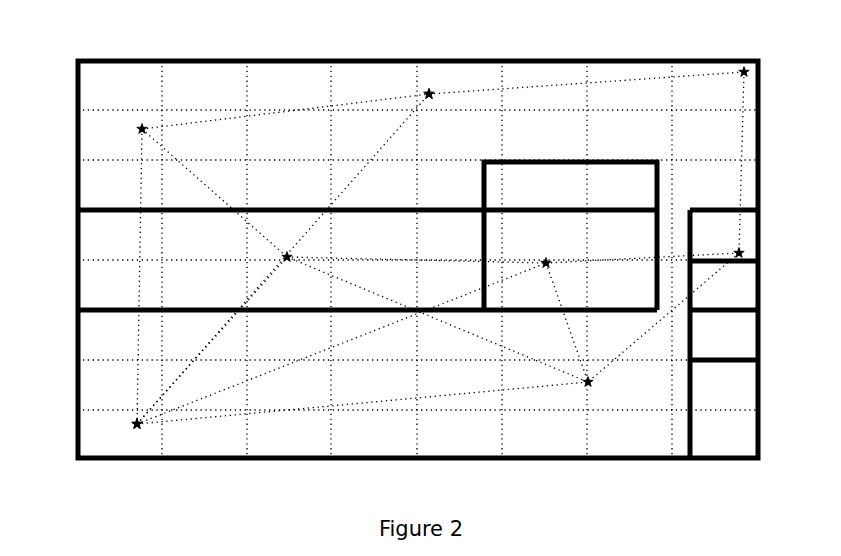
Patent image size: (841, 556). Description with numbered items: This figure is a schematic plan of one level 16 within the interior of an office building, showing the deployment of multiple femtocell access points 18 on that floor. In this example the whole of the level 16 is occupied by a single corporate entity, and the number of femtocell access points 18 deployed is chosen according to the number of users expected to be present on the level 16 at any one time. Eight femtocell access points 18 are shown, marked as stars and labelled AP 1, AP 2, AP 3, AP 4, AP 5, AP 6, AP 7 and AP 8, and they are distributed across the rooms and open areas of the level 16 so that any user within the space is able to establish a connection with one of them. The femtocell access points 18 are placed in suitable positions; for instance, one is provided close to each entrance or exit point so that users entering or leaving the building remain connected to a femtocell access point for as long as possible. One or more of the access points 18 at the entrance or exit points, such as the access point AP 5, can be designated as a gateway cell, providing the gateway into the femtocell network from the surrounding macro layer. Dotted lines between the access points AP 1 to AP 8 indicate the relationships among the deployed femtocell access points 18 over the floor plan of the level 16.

The level 16 is at (762, 140).
The femtocell access points 18 is at (430, 90).
The access point AP 1 is at (131, 438).
The access point AP 2 is at (601, 397).
The access point AP 3 is at (734, 270).
The access point AP 4 is at (557, 280).
The access point AP 5 is at (298, 273).
The access point AP 6 is at (131, 145).
The access point AP 7 is at (440, 111).
The access point AP 8 is at (722, 87).